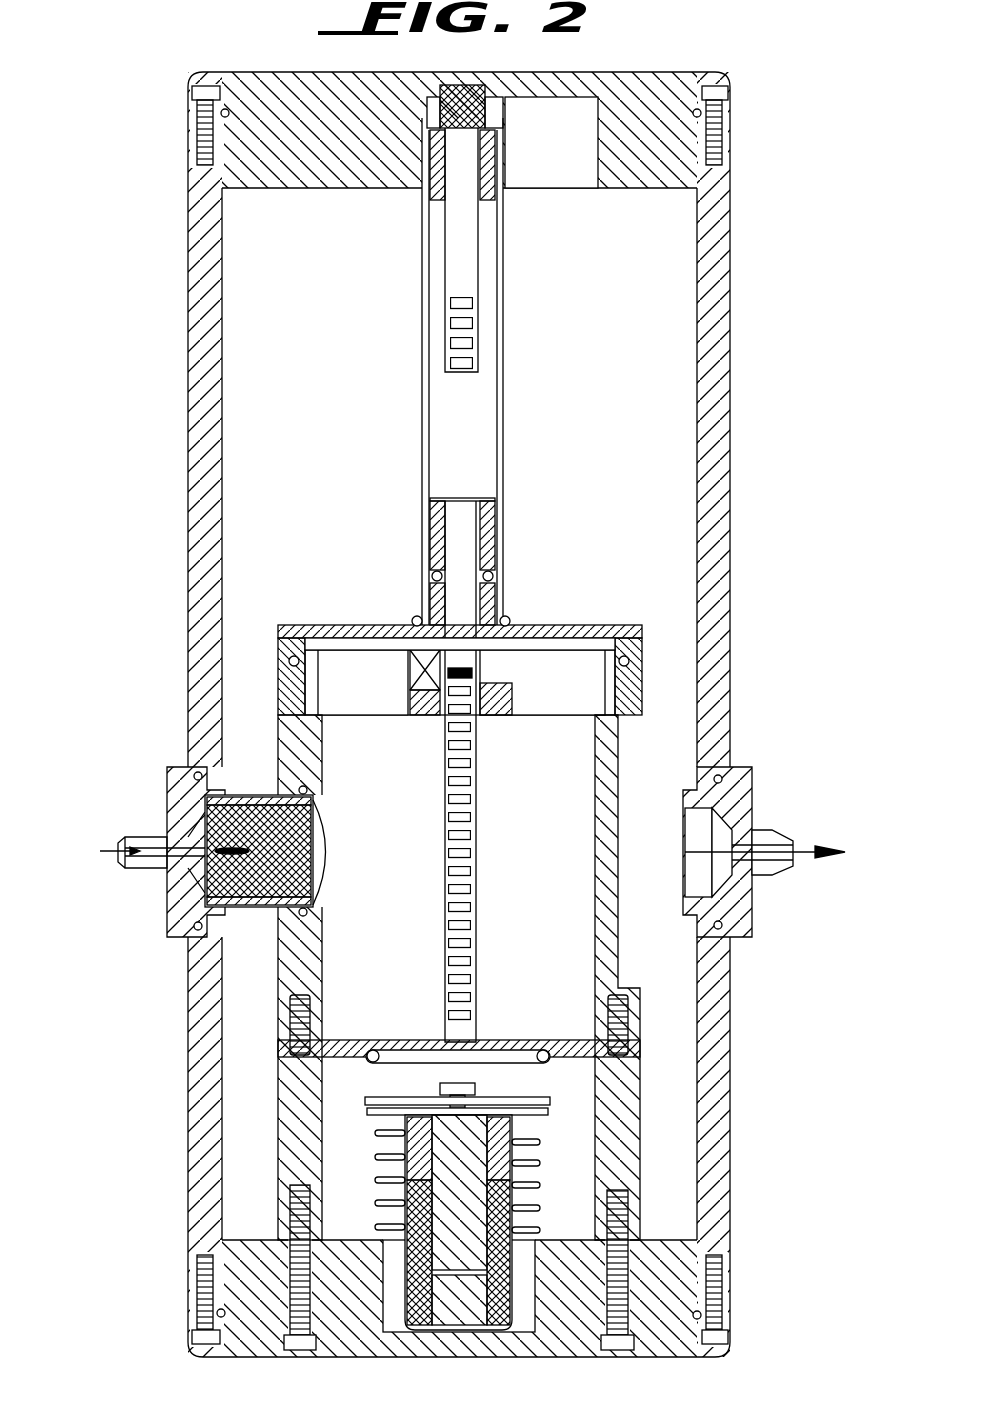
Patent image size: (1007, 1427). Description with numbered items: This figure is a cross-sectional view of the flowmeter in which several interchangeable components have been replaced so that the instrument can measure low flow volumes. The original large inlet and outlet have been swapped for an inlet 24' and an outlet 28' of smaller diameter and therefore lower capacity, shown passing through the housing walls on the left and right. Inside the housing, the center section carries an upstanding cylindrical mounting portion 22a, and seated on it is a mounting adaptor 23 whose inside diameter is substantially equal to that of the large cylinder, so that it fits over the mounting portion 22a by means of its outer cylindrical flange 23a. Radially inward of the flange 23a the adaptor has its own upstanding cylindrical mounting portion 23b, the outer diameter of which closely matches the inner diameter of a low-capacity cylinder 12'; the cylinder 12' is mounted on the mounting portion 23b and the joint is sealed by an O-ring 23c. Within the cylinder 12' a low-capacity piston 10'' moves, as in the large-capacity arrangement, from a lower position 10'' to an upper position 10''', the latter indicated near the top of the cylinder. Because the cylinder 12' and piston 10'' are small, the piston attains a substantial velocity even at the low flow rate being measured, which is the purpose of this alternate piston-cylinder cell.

The upper position of low-capacity piston 10''' is at (415, 252).
The low-capacity cylinder 12' is at (502, 371).
The low-capacity piston 10'' is at (505, 766).
The mounting adaptor 23 is at (610, 628).
The outer cylindrical flange 23a is at (642, 642).
The upstanding cylindrical mounting portion 23b is at (485, 597).
The O-ring 23c is at (412, 618).
The upstanding cylindrical mounting portion 22a is at (612, 690).
The inlet 24' is at (194, 852).
The outlet 28' is at (764, 834).